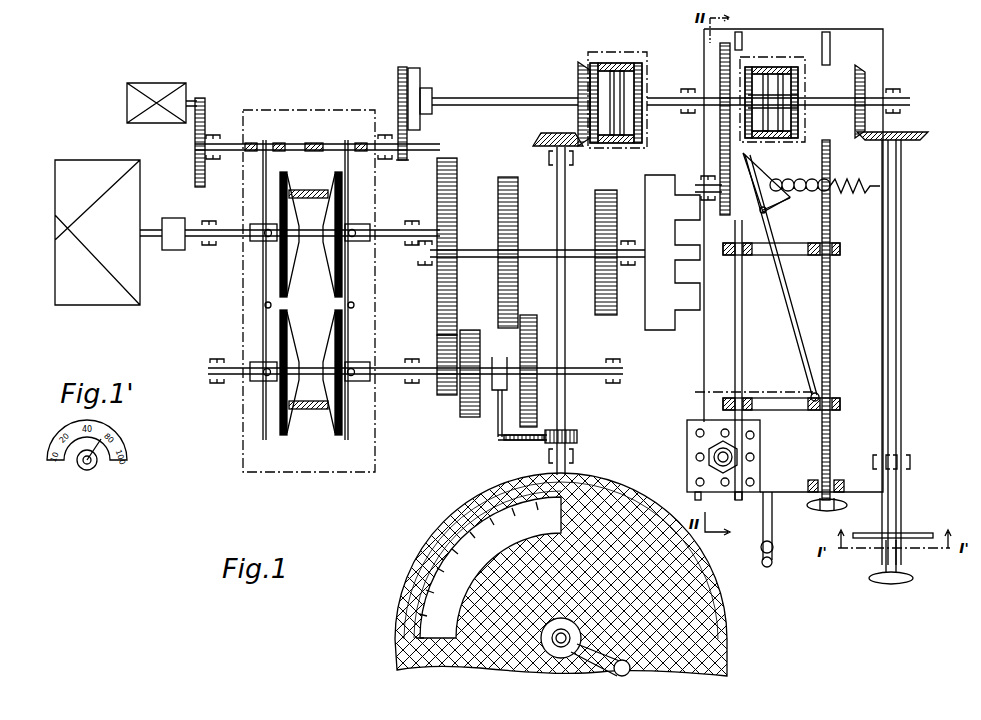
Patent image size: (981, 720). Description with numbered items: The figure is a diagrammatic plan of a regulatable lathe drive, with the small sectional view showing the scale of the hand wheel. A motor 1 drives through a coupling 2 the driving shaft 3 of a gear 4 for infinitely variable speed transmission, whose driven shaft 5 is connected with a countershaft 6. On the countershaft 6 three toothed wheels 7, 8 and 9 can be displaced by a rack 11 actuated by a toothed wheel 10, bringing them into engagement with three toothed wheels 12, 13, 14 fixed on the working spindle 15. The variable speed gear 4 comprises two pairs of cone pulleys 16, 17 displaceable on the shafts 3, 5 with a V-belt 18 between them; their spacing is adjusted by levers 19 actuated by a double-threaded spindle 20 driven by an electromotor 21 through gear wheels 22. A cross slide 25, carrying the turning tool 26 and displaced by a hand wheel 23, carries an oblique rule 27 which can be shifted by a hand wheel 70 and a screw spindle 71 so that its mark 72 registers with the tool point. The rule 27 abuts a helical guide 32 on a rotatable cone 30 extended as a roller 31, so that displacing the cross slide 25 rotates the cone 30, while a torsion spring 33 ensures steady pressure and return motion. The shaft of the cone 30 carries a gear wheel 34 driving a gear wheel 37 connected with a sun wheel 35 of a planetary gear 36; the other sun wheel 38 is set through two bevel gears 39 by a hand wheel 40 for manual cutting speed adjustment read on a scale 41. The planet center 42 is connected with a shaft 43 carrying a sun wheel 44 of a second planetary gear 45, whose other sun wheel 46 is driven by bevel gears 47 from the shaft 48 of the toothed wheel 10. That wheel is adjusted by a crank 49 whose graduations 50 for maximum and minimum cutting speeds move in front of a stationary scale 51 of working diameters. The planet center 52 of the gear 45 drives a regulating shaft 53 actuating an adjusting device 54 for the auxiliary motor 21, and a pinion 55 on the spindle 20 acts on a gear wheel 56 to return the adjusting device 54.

The motor 1 is at (138, 268).
The coupling 2 is at (172, 250).
The driving shaft 3 is at (233, 238).
The gear for infinitely variable speed transmission 4 is at (243, 440).
The driven shaft 5 is at (226, 378).
The countershaft 6 is at (584, 368).
The toothed wheel 7 is at (446, 395).
The toothed wheel 8 is at (469, 417).
The toothed wheel 9 is at (538, 395).
The toothed wheel 10 is at (550, 441).
The rack 11 is at (506, 441).
The toothed wheel 12 is at (457, 292).
The toothed wheel 13 is at (518, 292).
The toothed wheel 14 is at (596, 296).
The working spindle 15 is at (541, 250).
The cone pulleys 16 is at (333, 187).
The cone pulleys 17 is at (333, 416).
The V-belt 18 is at (308, 205).
The levers 19 is at (262, 291).
The spindle 20 is at (298, 143).
The electromotor 21 is at (163, 90).
The gear wheels 22 is at (203, 135).
The hand wheel 23 is at (762, 562).
The cross slide 25 is at (690, 462).
The turning tool 26 is at (698, 404).
The rule 27 is at (788, 298).
The cone 30 is at (770, 178).
The roller 31 is at (806, 178).
The helical guide 32 is at (782, 197).
The torsion spring 33 is at (840, 180).
The gear wheel 34 is at (720, 170).
The sun wheel 35 is at (745, 122).
The planetary gear 36 is at (756, 66).
The gear wheel 37 is at (720, 68).
The sun wheel 38 is at (800, 83).
The bevel gears 39 is at (870, 131).
The hand wheel 40 is at (880, 578).
The scale 41 is at (903, 532).
The planet center 42 is at (775, 74).
The shaft 43 is at (665, 98).
The sun wheel 44 is at (642, 82).
The second planetary gear 45 is at (603, 62).
The sun wheel 46 is at (580, 68).
The bevel gears 47 is at (576, 136).
The shaft 48 is at (557, 198).
The crank 49 is at (587, 650).
The graduations 50 is at (420, 632).
The stationary scale 51 is at (447, 578).
The planet center 52 is at (628, 72).
The regulating shaft 53 is at (527, 97).
The adjusting device 54 is at (430, 90).
The pinion 55 is at (401, 161).
The gear wheel 56 is at (399, 78).
The hand wheel 70 is at (823, 512).
The screw spindle 71 is at (831, 349).
The mark 72 is at (818, 396).